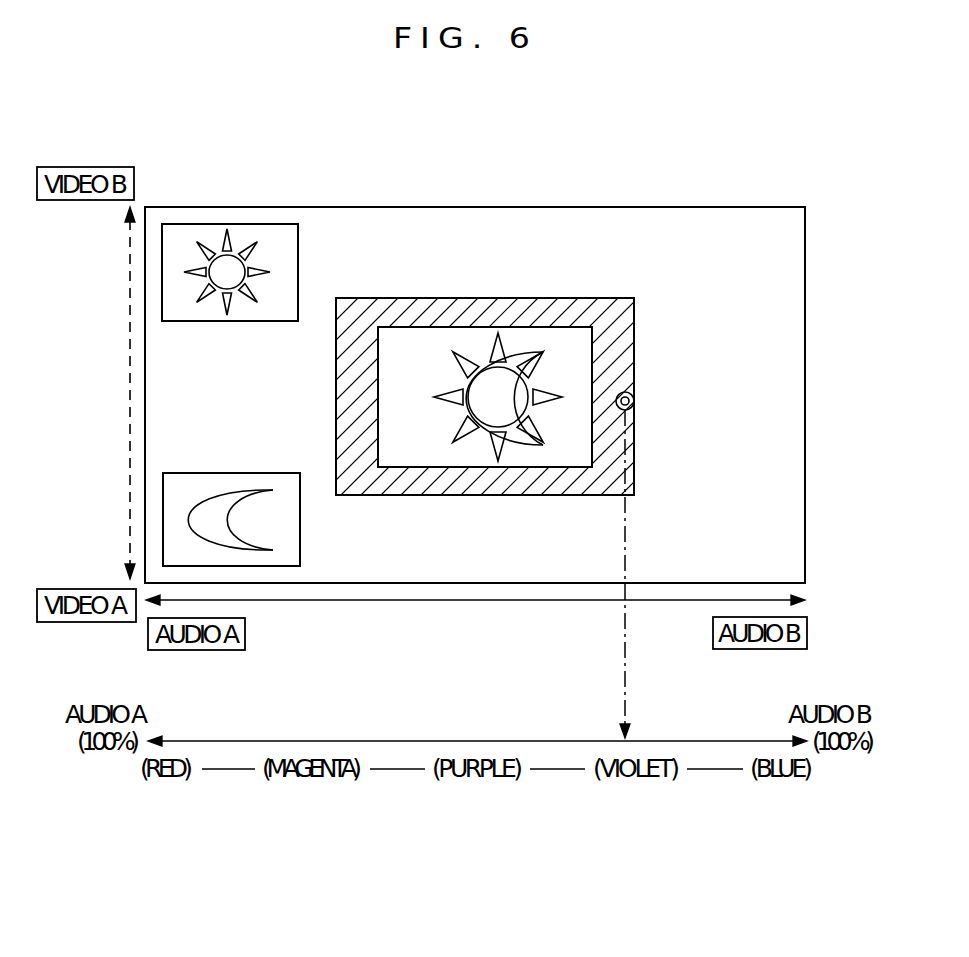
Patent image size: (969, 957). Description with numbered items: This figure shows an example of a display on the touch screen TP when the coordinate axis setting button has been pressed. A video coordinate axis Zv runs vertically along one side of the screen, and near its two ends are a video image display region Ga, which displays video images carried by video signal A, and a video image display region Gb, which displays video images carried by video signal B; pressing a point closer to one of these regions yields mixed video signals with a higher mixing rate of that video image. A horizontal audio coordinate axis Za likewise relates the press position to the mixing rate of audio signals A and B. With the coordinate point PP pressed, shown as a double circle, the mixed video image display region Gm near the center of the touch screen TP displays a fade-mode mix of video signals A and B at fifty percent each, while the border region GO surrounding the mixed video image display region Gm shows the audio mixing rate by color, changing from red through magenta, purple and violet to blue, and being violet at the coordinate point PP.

The touch screen TP is at (806, 350).
The video image display region Gb is at (262, 223).
The video image display region Ga is at (283, 567).
The border region GO is at (601, 297).
The mixed video image display region Gm is at (520, 323).
The coordinate point PP is at (642, 560).
The video coordinate axis Zv is at (128, 360).
The audio coordinate axis Za is at (490, 601).